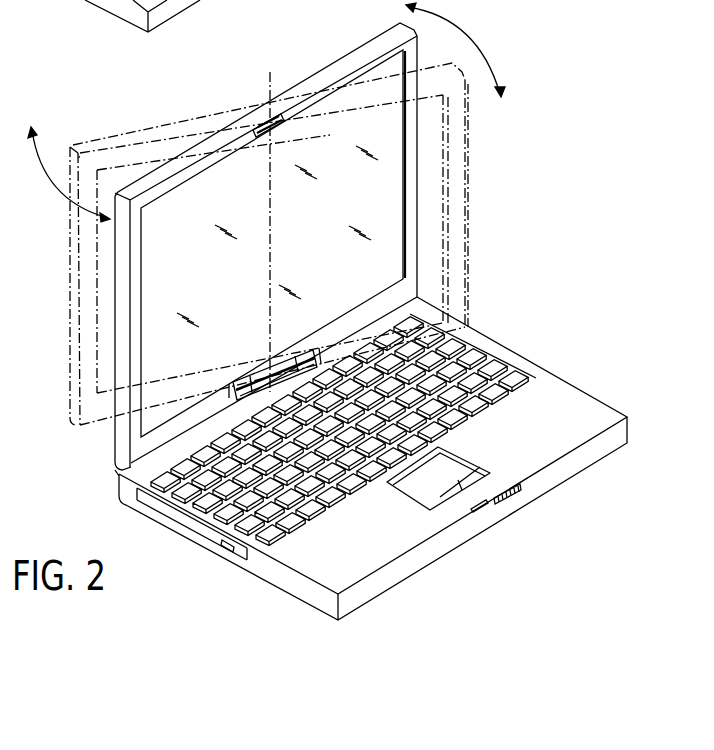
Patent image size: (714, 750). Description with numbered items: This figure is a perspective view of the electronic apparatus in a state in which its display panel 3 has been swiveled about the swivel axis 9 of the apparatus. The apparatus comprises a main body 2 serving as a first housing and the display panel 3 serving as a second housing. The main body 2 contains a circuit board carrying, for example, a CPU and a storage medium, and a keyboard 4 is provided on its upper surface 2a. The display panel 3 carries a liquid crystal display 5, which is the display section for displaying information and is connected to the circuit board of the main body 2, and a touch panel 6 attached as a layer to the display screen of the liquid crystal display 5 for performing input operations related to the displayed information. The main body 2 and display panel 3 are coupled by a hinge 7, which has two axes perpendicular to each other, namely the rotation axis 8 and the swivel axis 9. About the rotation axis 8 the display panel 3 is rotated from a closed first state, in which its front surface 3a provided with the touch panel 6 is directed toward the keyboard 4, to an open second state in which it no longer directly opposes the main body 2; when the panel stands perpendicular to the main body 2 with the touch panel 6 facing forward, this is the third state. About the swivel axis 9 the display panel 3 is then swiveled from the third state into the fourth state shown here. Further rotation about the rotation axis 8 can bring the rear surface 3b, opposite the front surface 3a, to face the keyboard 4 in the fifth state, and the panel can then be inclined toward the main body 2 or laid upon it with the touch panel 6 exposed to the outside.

The main body 2 is at (425, 558).
The upper surface 2a is at (560, 397).
The display panel 3 is at (333, 70).
The front surface 3a is at (409, 149).
The rear surface 3b is at (381, 58).
The keyboard 4 is at (486, 337).
The liquid crystal display 5 is at (380, 202).
The touch panel 6 is at (180, 197).
The hinge 7 is at (292, 343).
The rotation axis 8 is at (110, 480).
The swivel axis 9 is at (266, 82).